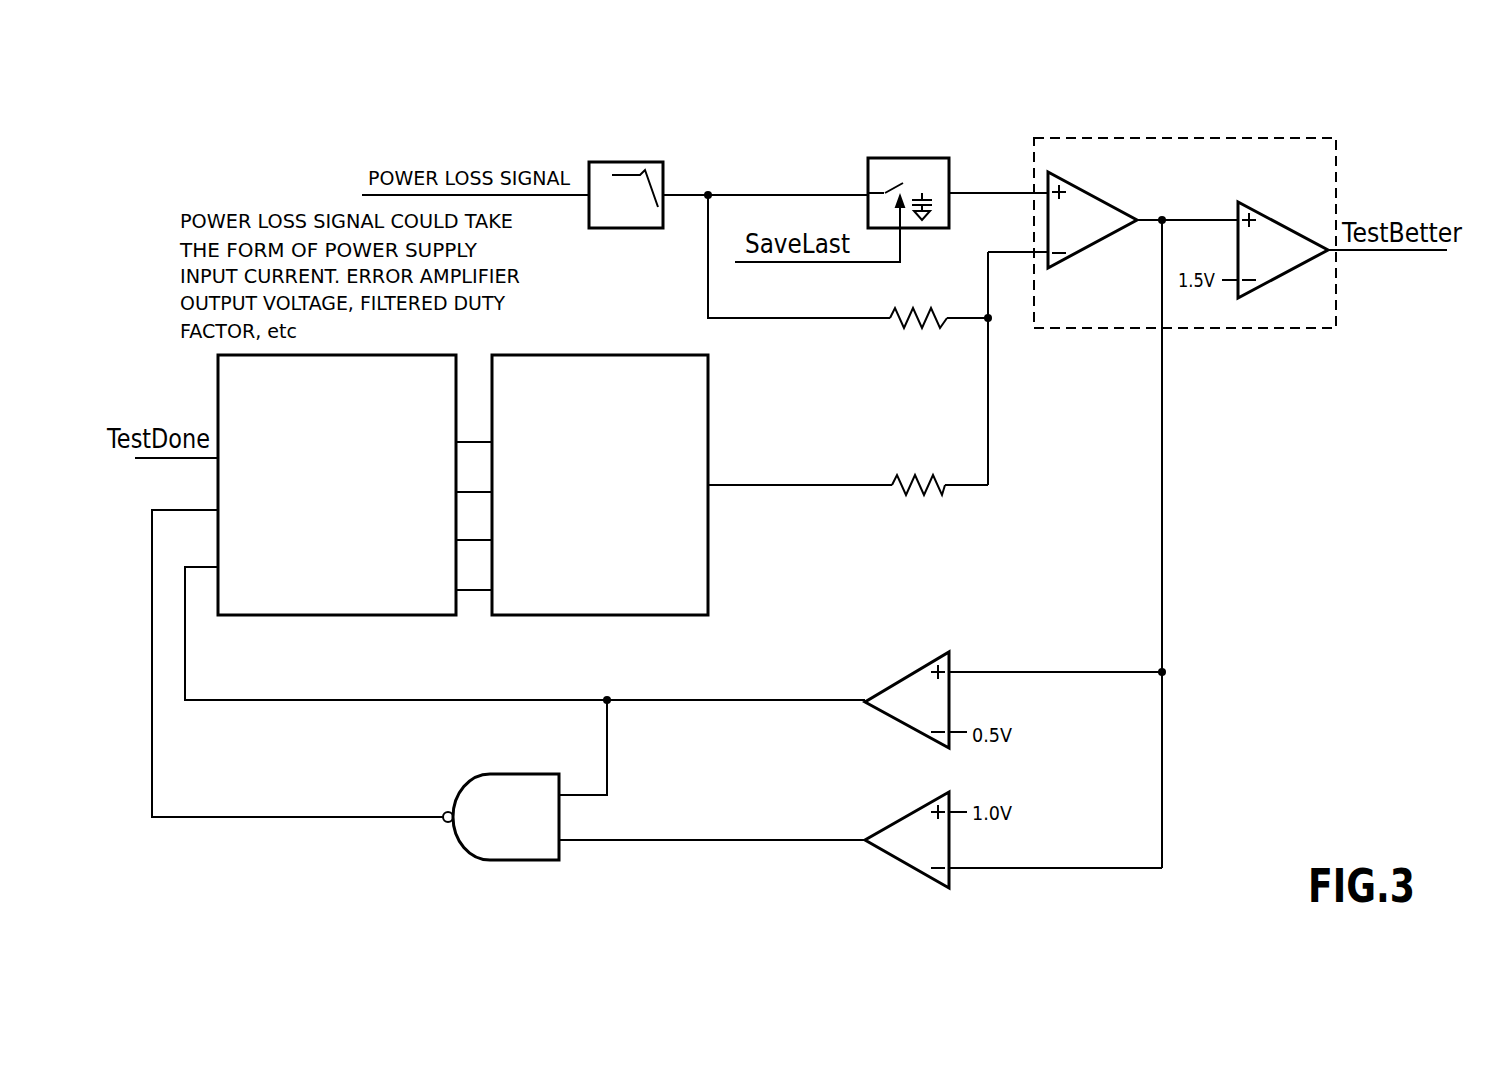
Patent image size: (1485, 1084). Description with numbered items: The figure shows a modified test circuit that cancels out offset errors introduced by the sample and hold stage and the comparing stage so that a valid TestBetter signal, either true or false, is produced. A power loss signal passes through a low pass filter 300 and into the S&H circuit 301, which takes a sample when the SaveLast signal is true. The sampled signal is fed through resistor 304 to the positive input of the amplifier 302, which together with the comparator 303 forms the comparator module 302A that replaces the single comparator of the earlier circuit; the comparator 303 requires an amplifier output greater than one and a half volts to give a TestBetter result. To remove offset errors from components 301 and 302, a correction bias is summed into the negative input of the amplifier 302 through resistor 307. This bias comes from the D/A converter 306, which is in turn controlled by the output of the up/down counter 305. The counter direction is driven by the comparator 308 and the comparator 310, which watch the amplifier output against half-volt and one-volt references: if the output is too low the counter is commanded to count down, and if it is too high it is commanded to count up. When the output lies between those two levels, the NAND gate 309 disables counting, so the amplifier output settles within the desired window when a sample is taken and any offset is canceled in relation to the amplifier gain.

The low pass filter 300 is at (628, 162).
The S&H circuit 301 is at (903, 158).
The amplifier 302 is at (1090, 197).
The comparator module 302A is at (1210, 330).
The comparator 303 is at (1282, 227).
The resistor 304 is at (898, 328).
The up/down counter 305 is at (338, 617).
The D/A converter 306 is at (588, 617).
The resistor 307 is at (897, 492).
The comparator 308 is at (905, 675).
The NAND gate 309 is at (530, 772).
The comparator 310 is at (905, 815).